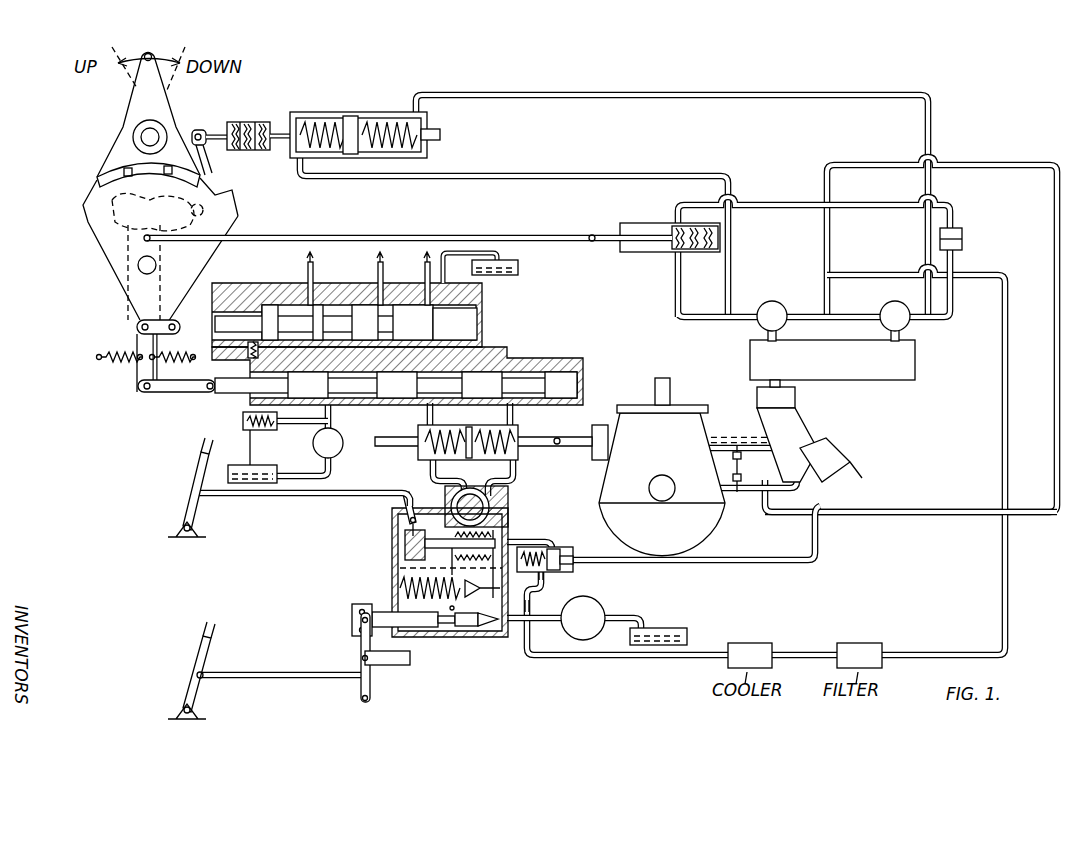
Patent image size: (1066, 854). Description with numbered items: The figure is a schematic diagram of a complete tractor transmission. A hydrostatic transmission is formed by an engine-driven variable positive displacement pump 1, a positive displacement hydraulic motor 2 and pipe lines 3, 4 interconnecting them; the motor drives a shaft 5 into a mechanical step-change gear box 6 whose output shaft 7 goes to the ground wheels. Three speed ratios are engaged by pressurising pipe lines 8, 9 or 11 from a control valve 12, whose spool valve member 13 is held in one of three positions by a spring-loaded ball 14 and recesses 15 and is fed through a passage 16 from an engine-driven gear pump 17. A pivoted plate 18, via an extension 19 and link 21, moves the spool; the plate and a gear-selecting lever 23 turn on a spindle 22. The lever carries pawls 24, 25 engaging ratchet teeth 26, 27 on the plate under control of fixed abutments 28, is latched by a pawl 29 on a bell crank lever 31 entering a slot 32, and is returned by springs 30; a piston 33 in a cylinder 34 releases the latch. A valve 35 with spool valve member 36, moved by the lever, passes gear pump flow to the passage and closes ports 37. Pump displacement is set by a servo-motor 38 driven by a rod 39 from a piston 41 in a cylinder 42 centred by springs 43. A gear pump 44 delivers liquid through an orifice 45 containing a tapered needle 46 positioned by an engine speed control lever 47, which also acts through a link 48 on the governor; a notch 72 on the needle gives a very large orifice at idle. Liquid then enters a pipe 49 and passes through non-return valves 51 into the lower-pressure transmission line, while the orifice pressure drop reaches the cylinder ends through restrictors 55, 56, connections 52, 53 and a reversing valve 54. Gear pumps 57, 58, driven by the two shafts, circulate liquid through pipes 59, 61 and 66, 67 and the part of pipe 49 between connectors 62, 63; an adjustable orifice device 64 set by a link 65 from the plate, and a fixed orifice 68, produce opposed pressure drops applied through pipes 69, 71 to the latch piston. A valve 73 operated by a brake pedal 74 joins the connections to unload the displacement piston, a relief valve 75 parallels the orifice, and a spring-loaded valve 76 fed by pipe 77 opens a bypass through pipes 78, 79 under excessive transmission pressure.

The variable positive displacement pump 1 is at (708, 535).
The positive displacement hydraulic motor 2 is at (757, 400).
The pipe line 3 is at (712, 446).
The pipe line 4 is at (747, 495).
The shaft 5 is at (766, 334).
The mechanical step-change gear box 6 is at (832, 372).
The output shaft 7 is at (900, 334).
The pipe line 8 is at (424, 276).
The pipe line 9 is at (376, 276).
The pipe line 11 is at (306, 274).
The control valve 12 is at (484, 290).
The spool valve member 13 is at (478, 312).
The spring-loaded ball 14 is at (240, 366).
The recesses 15 is at (262, 340).
The passage 16 is at (333, 408).
The gear pump 17 is at (333, 452).
The pivoted plate 18 is at (102, 250).
The extension 19 is at (138, 306).
The link 21 is at (136, 338).
The spindle 22 is at (138, 268).
The gear-selecting lever 23 is at (132, 108).
The pawl 24 is at (103, 175).
The pawl 25 is at (160, 96).
The ratchet teeth 26 is at (164, 170).
The ratchet teeth 27 is at (222, 192).
The fixed abutments 28 is at (130, 142).
The pawl 29 is at (112, 210).
The springs 30 is at (118, 362).
The bell crank lever 31 is at (213, 130).
The slot 32 is at (125, 232).
The piston 33 is at (346, 116).
The cylinder 34 is at (372, 112).
The valve 35 is at (455, 426).
The spool valve member 36 is at (478, 338).
The ports 37 is at (427, 410).
The servo-motor 38 is at (600, 425).
The rod 39 is at (545, 440).
The piston 41 is at (508, 470).
The cylinder 42 is at (432, 472).
The springs 43 is at (426, 452).
The gear pump 44 is at (597, 612).
The orifice 45 is at (450, 630).
The tapered needle 46 is at (490, 624).
The engine speed control lever 47 is at (212, 668).
The link 48 is at (384, 664).
The pipe 49 is at (576, 660).
The non-return valves 51 is at (733, 476).
The connection 52 is at (436, 518).
The connection 53 is at (510, 530).
The reversing valve 54 is at (510, 490).
The restrictor 55 is at (398, 566).
The restrictor 56 is at (540, 576).
The gear pump 57 is at (764, 304).
The gear pump 58 is at (887, 306).
The pipe 59 is at (796, 312).
The pipe 61 is at (674, 292).
The connector 62 is at (822, 310).
The connector 63 is at (824, 196).
The adjustable orifice device 64 is at (690, 250).
The link 65 is at (570, 236).
The pipe 66 is at (852, 278).
The pipe 67 is at (952, 288).
The fixed orifice 68 is at (963, 244).
The pipe 69 is at (732, 258).
The pipe 71 is at (840, 96).
The notch 72 is at (426, 628).
The valve 73 is at (405, 548).
The brake pedal 74 is at (184, 492).
The relief valve 75 is at (470, 628).
The spring-loaded valve 76 is at (574, 566).
The pipe 77 is at (818, 532).
The pipe 78 is at (548, 542).
The pipe 79 is at (532, 602).